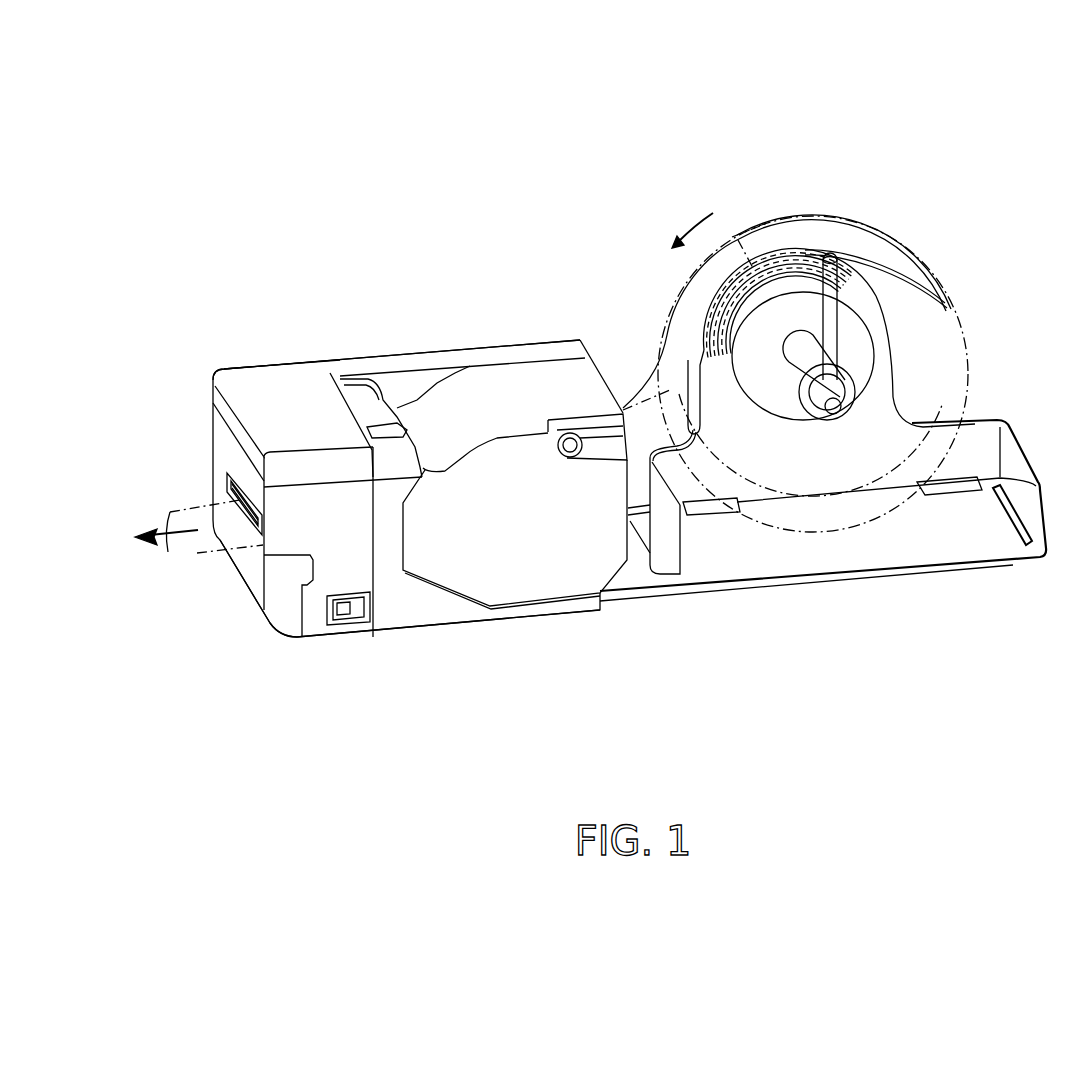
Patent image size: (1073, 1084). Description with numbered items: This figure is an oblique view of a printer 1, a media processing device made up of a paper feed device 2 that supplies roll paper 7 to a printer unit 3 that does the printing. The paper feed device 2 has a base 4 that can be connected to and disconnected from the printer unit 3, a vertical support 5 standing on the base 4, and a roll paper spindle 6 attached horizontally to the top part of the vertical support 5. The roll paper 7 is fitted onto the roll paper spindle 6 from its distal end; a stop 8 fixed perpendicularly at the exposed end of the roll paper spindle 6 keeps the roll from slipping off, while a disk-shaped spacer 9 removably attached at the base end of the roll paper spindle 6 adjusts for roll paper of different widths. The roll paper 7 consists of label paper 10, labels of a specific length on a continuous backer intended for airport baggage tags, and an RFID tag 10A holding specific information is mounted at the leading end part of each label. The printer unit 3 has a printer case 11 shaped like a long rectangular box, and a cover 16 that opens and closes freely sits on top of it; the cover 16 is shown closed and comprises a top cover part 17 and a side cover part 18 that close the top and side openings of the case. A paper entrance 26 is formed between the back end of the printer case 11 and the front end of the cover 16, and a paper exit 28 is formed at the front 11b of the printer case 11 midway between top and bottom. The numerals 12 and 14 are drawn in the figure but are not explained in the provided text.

The printer 1 is at (418, 285).
The paper feed device 2 is at (817, 178).
The printer unit 3 is at (352, 339).
The base 4 is at (840, 575).
The vertical support 5 is at (897, 363).
The roll paper spindle 6 is at (810, 353).
The roll paper 7 is at (870, 225).
The stop 8 is at (833, 310).
The spacer 9 is at (877, 371).
The label paper 10 is at (680, 308).
The RFID tag 10A is at (772, 237).
The printer case 11 is at (304, 354).
The front of the printer case 11b is at (257, 580).
The cover 12 is at (260, 376).
The bottom portion 14 is at (432, 607).
The cover 16 is at (525, 362).
The top cover part 17 is at (482, 390).
The side cover part 18 is at (506, 578).
The paper entrance 26 is at (638, 457).
The paper exit 28 is at (248, 523).